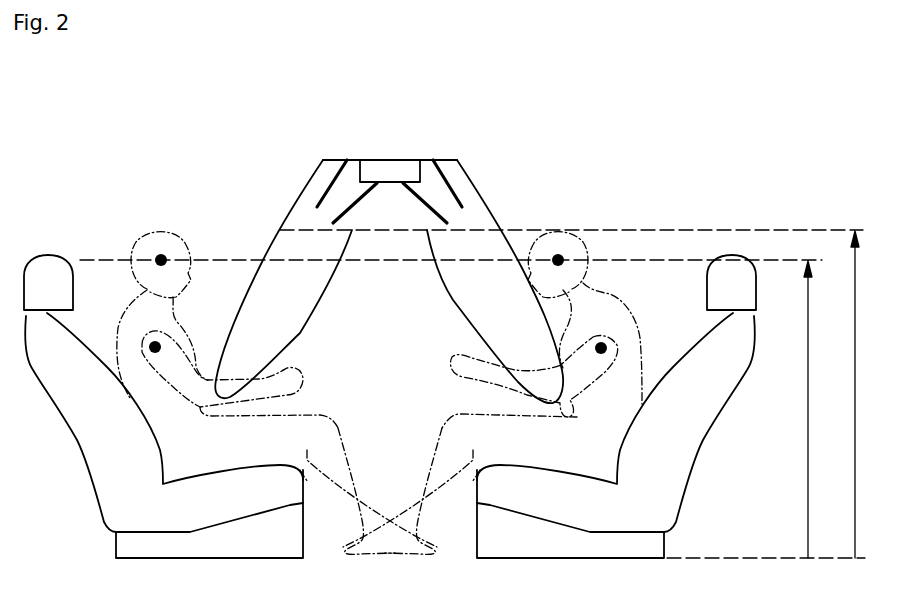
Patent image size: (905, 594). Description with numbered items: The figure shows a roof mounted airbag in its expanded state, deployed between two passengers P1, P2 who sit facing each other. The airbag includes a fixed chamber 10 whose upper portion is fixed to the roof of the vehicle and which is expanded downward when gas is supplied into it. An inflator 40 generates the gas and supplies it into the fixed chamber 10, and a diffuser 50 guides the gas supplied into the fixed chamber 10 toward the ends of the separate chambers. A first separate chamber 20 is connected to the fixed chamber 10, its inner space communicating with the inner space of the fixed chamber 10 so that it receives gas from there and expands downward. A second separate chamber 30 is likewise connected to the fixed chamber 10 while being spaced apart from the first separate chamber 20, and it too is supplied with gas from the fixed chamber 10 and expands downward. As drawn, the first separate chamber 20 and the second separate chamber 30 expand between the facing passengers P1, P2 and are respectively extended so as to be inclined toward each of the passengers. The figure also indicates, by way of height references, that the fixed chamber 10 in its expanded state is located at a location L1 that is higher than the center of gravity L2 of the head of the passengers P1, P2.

The fixed chamber 10 is at (381, 234).
The first separate chamber 20 is at (258, 292).
The second separate chamber 30 is at (462, 308).
The inflator 40 is at (387, 168).
The diffuser 50 is at (328, 185).
The passenger P1 is at (138, 246).
The passenger P2 is at (580, 230).
The location of the fixed chamber L1 is at (871, 394).
The center of gravity of the head L2 is at (823, 409).